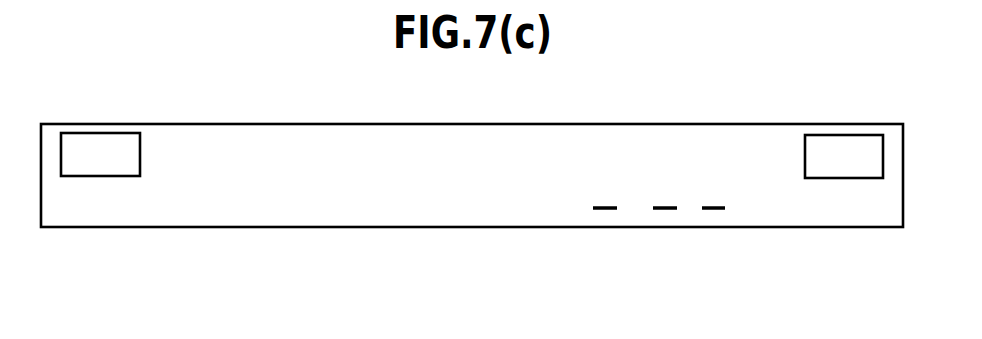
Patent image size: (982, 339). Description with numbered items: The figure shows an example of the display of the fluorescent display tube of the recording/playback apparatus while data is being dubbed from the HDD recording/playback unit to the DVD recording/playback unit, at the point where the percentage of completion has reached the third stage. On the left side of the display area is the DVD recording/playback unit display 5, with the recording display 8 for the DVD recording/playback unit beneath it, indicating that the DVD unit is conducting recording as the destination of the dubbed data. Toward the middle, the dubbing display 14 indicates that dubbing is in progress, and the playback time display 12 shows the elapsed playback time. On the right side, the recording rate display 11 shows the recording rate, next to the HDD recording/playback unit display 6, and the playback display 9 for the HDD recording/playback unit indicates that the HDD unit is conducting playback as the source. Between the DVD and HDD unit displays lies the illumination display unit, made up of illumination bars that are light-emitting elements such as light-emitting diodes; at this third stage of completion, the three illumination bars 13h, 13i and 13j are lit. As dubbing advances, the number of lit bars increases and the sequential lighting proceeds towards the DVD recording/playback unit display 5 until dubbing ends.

The DVD recording/playback unit display 5 is at (141, 153).
The recording display 8 is at (153, 182).
The dubbing display 14 is at (520, 142).
The playback time display 12 is at (625, 170).
The recording rate display 11 is at (750, 143).
The HDD recording/playback unit display 6 is at (837, 136).
The illumination bar 13h is at (603, 211).
The illumination bar 13i is at (663, 211).
The illumination bar 13j is at (713, 211).
The playback display 9 is at (784, 214).